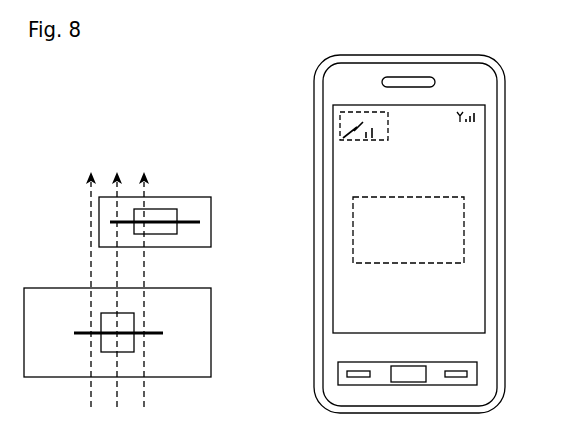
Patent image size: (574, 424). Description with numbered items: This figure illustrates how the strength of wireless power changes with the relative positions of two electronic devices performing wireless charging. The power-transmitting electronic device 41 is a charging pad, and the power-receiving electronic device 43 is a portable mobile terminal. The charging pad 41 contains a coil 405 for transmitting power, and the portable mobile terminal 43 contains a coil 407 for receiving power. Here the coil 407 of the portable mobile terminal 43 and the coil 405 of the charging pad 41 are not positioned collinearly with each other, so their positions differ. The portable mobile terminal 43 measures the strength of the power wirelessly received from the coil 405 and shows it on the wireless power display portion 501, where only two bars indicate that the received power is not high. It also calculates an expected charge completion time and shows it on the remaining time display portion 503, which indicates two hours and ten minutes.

The power-transmitting electronic device 41 is at (211, 347).
The power-receiving electronic device 43 is at (211, 215).
The coil 405 is at (134, 325).
The coil 407 is at (177, 213).
The wireless power display portion 501 is at (340, 118).
The remaining time display portion 503 is at (353, 245).